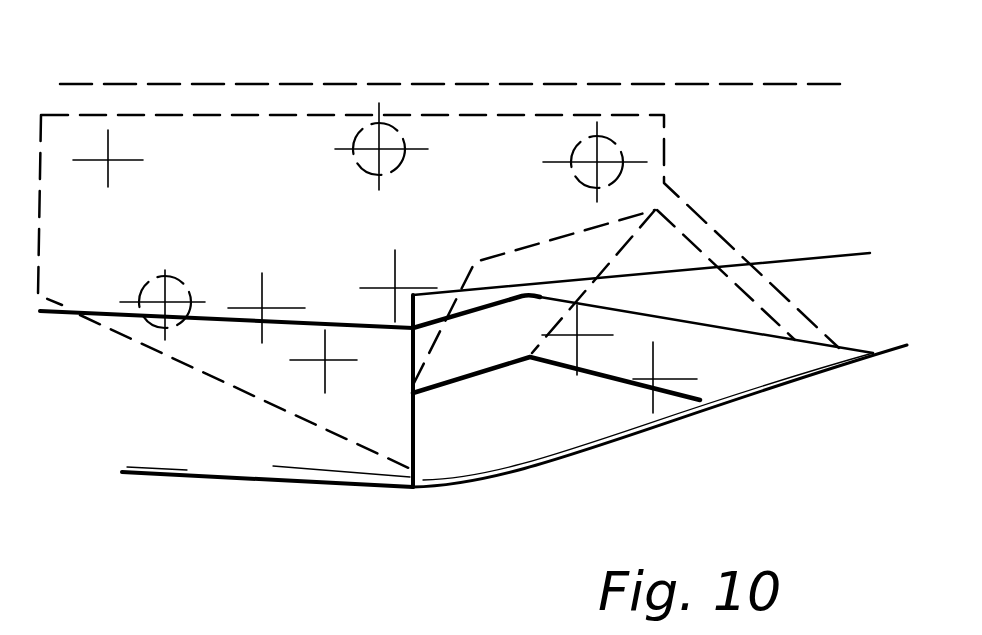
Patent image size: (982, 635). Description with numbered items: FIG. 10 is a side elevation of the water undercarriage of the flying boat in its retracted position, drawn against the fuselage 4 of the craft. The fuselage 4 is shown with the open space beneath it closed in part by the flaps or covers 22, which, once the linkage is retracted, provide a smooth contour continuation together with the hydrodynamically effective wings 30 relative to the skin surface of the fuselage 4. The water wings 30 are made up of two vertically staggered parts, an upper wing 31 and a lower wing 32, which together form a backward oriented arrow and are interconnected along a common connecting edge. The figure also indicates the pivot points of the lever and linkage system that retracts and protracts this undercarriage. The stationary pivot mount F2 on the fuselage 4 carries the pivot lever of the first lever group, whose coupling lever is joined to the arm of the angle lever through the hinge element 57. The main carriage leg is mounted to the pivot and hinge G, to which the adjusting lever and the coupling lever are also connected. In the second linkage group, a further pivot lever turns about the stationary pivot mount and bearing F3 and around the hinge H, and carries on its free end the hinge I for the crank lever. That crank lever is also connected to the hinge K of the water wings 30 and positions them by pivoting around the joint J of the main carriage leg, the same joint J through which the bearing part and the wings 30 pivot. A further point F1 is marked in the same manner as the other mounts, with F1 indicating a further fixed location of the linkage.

The fuselage 4 is at (173, 445).
The flaps or covers 22 is at (480, 437).
The hydrodynamically effective wings 30 is at (731, 401).
The upper wing 31 is at (740, 357).
The lower wing 32 is at (722, 292).
The hinge element 57 is at (108, 160).
The fastener point F1 is at (165, 302).
The stationary pivot mount F2 is at (379, 149).
The stationary pivot mount and bearing F3 is at (597, 162).
The pivot and hinge G is at (262, 308).
The hinge H is at (395, 288).
The hinge I is at (325, 360).
The joint J is at (653, 382).
The hinge K is at (577, 337).